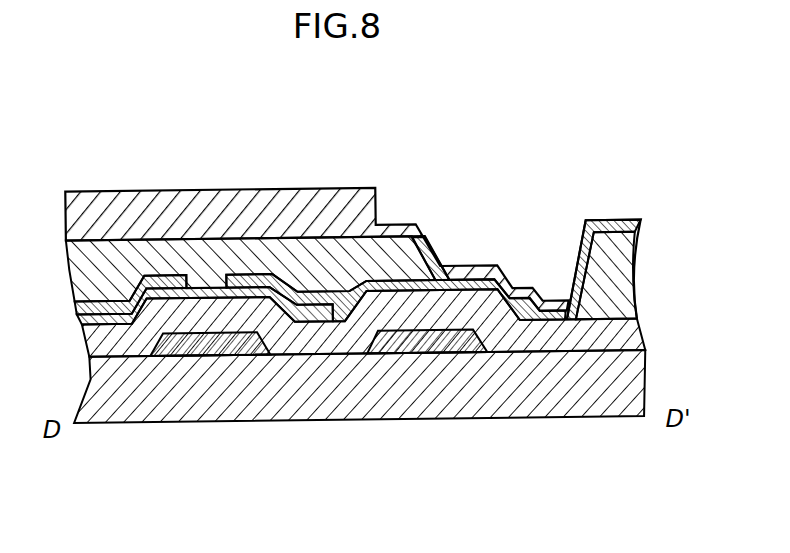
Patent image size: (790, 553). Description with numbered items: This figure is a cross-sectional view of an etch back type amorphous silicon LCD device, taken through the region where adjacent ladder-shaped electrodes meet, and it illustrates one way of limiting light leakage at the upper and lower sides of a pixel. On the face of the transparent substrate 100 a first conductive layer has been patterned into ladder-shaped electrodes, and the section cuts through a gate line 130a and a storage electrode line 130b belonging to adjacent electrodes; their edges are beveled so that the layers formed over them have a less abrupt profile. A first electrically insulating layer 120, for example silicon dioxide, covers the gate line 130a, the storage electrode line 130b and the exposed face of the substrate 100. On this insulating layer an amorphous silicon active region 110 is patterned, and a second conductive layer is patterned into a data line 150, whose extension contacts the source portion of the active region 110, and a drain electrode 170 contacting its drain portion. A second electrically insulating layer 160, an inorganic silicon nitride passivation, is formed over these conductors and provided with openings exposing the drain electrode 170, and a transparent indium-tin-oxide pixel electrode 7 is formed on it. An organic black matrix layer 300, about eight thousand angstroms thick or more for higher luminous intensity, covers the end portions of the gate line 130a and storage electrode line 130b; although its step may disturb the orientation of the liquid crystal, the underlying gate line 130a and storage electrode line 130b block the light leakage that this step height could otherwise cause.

The transparent substrate 100 is at (605, 385).
The amorphous silicon active region 110 is at (107, 323).
The first electrically insulating layer 120 is at (540, 340).
The gate line 130a is at (185, 345).
The storage electrode line 130b is at (450, 345).
The data line 150 is at (99, 308).
The second electrically insulating layer 160 is at (396, 231).
The drain electrode 170 is at (247, 270).
The organic black matrix layer 300 is at (165, 210).
The pixel electrode 7 is at (600, 232).